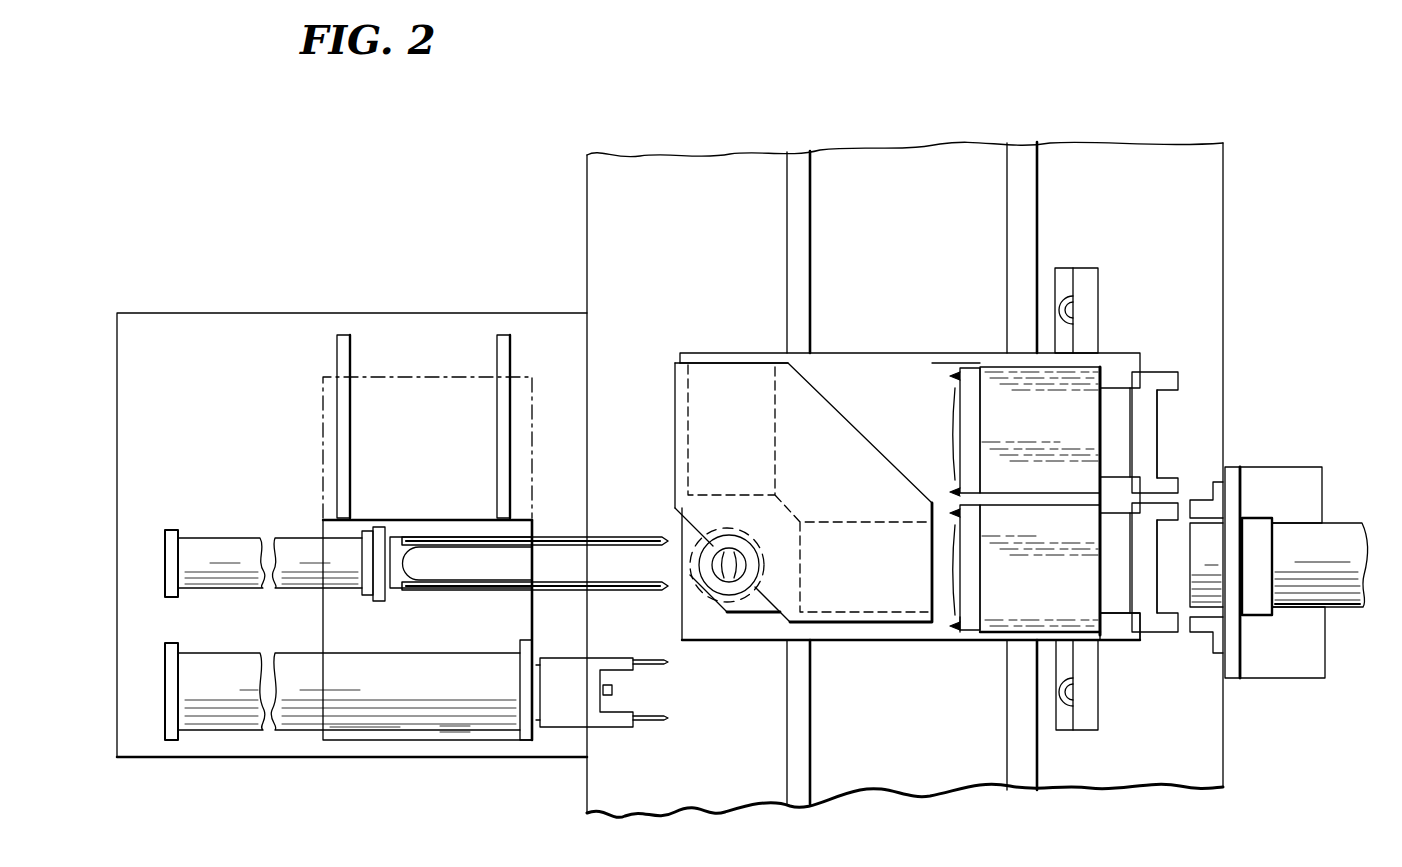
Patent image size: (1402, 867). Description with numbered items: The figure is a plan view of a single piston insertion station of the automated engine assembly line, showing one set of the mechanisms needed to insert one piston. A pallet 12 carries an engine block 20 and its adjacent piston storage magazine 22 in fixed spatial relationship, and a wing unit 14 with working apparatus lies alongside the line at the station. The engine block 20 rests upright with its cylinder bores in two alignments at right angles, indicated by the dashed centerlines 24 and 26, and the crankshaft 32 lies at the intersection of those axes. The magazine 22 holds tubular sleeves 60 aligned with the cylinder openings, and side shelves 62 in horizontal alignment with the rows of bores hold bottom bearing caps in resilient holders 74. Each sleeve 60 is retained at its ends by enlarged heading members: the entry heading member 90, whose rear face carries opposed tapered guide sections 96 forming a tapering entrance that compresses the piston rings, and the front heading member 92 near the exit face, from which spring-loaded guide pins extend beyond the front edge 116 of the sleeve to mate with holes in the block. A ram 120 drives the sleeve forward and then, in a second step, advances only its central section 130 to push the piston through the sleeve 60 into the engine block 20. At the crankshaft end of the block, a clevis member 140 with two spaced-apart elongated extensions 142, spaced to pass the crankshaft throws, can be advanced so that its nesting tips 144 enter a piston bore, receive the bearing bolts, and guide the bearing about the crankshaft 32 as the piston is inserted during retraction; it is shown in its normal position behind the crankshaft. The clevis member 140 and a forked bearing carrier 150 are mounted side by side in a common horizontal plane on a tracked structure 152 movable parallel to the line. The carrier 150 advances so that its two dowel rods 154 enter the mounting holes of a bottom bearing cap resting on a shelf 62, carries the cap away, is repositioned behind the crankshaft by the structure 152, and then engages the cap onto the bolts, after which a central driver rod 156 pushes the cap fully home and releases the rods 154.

The pallet 12 is at (898, 353).
The wing unit 14 is at (1294, 440).
The engine block 20 is at (871, 494).
The piston storage magazine 22 is at (995, 363).
The cylinder bore centerline 24 is at (860, 583).
The cylinder bore centerline 26 is at (712, 363).
The crankshaft 32 is at (722, 580).
The tubular sleeve 60 is at (1124, 640).
The side shelf 62 is at (1100, 727).
The resilient holder 74 is at (1088, 318).
The entry heading member 90 is at (1180, 395).
The front heading member 92 is at (955, 400).
The tapered guide section 96 is at (1145, 385).
The front edge of sleeve 116 is at (972, 612).
The ram 120 is at (1380, 488).
The central section of ram 130 is at (1208, 617).
The clevis member 140 is at (435, 492).
The elongated extension 142 is at (565, 532).
The nesting tip 144 is at (667, 540).
The forked bearing carrier 150 is at (612, 728).
The tracked structure 152 is at (447, 375).
The dowel rod 154 is at (668, 718).
The central driver rod 156 is at (612, 690).